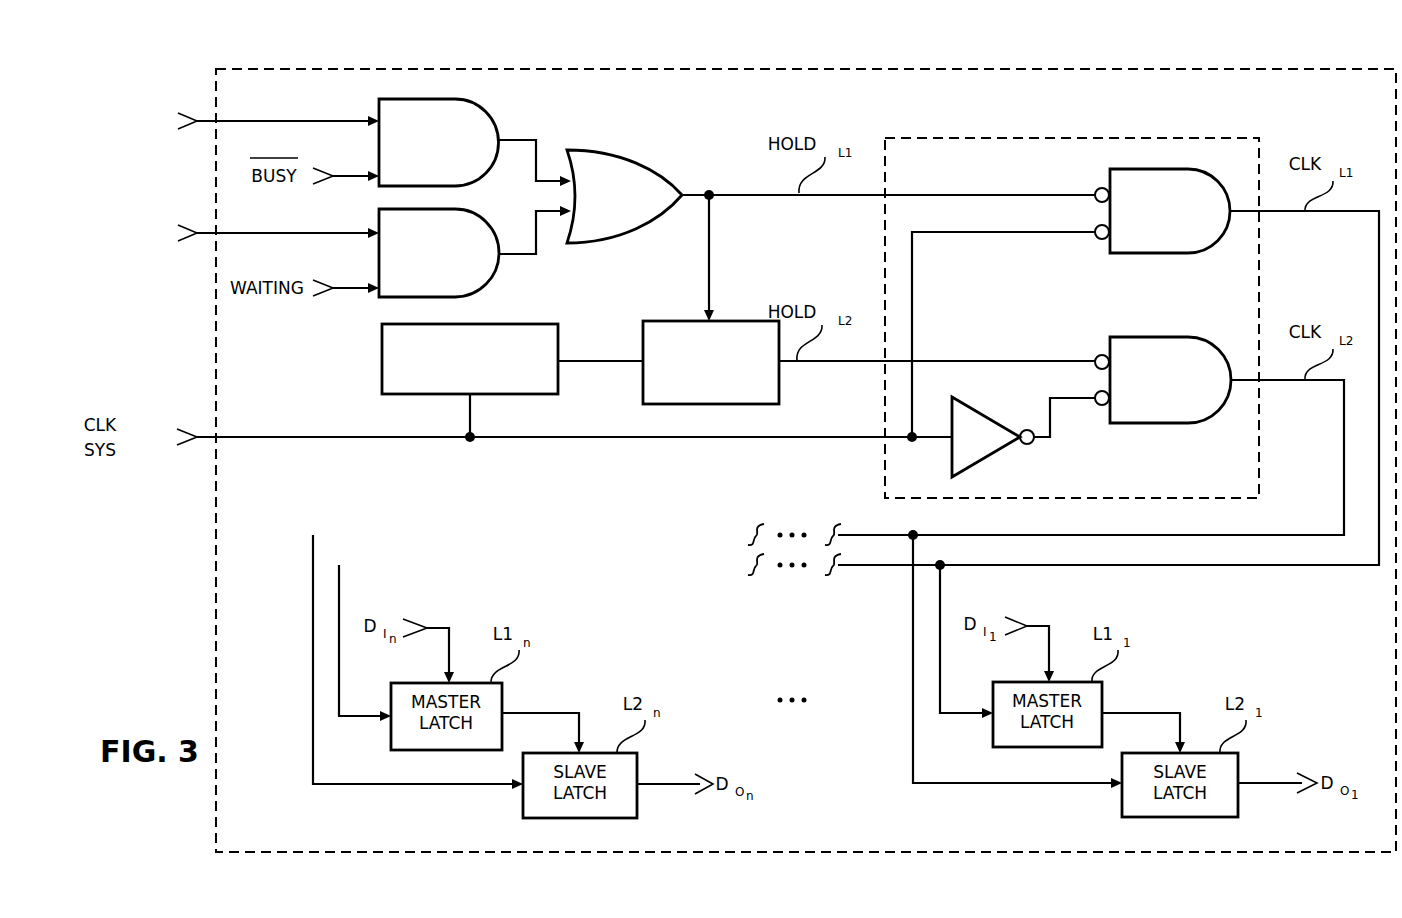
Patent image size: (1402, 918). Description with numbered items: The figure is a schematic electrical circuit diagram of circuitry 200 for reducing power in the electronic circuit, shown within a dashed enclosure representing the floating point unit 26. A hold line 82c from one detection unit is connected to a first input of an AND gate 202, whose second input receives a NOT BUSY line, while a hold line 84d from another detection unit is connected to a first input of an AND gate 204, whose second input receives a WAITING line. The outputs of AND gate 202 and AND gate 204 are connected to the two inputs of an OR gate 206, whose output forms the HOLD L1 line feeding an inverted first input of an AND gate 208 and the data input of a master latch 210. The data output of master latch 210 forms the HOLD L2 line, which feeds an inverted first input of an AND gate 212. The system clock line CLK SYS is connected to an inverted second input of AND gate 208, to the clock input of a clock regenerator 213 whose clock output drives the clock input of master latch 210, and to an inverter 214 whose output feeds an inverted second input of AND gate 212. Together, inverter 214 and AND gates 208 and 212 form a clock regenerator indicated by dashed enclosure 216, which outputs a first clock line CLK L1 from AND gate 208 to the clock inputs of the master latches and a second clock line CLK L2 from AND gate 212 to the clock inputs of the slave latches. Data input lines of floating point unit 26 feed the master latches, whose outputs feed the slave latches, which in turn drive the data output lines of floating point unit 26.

The floating point unit 26 is at (903, 69).
The hold line 82c is at (208, 121).
The hold line 84d is at (208, 233).
The circuitry 200 is at (666, 140).
The AND gate 202 is at (420, 153).
The AND gate 204 is at (420, 264).
The OR gate 206 is at (607, 196).
The AND gate 208 is at (1149, 222).
The master latch 210 is at (732, 397).
The AND gate 212 is at (1149, 390).
The clock regenerator 213 is at (522, 351).
The inverter 214 is at (962, 445).
The clock regenerator 216 is at (1185, 138).